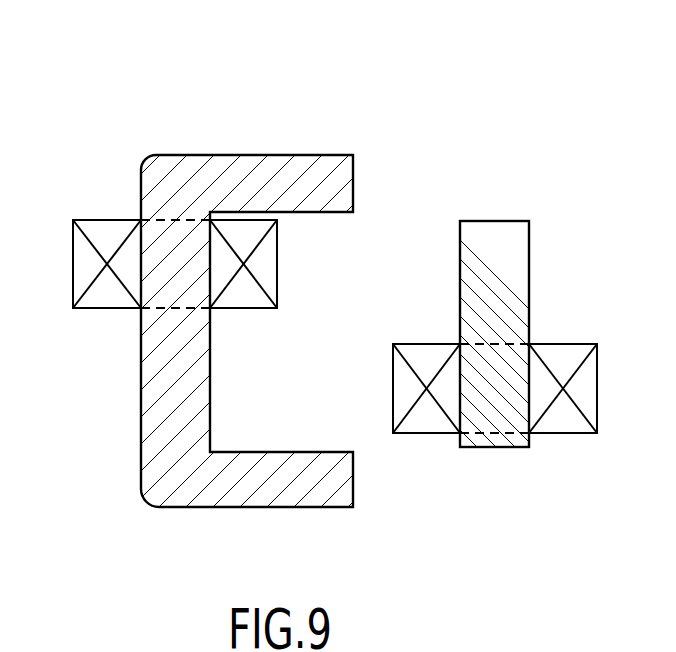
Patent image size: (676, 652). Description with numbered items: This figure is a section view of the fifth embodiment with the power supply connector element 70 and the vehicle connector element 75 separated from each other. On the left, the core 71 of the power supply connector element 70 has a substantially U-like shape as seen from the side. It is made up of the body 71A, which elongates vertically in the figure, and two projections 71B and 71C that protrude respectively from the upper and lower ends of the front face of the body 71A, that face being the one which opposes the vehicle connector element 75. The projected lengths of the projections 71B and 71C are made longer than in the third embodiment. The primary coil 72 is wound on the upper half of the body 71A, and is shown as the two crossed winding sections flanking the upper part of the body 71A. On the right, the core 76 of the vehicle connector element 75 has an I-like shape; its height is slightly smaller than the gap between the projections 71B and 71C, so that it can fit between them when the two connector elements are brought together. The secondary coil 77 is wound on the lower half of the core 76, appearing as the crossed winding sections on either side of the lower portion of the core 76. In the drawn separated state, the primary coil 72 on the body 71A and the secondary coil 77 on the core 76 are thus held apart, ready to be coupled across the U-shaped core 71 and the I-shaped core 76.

The power supply connector element 70 is at (196, 291).
The core 71 is at (196, 312).
The body 71A is at (150, 363).
The projection 71B is at (302, 157).
The projection 71C is at (235, 502).
The primary coil 72 is at (97, 225).
The vehicle connector element 75 is at (515, 311).
The core 76 is at (522, 285).
The secondary coil 77 is at (553, 422).